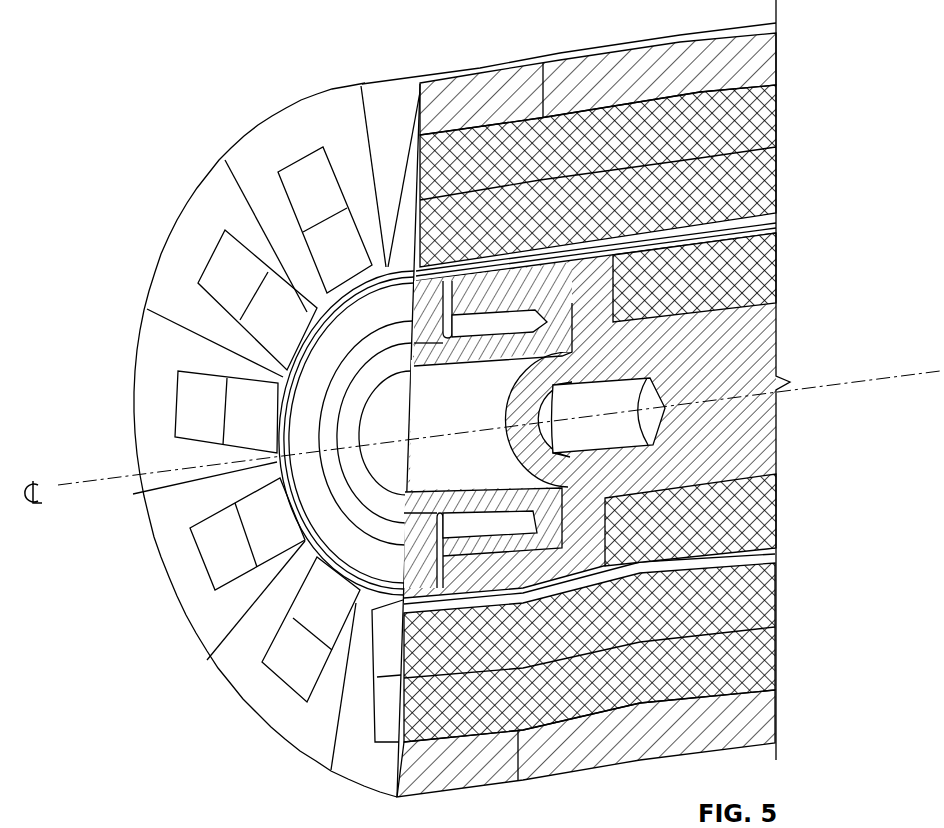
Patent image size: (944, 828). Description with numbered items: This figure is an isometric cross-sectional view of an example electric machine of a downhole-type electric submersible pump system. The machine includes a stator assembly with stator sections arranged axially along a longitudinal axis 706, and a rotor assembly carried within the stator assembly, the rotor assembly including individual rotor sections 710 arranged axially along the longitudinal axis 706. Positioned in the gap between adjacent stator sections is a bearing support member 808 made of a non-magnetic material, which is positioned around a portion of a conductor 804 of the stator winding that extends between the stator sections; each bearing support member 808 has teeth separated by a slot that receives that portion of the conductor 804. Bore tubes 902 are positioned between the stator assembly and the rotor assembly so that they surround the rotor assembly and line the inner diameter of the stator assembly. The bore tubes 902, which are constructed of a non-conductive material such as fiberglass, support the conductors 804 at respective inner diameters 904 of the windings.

The longitudinal axis 706 is at (106, 478).
The rotor section 710 is at (803, 511).
The conductor 804 is at (220, 268).
The bearing support member 808 is at (248, 155).
The bore tube 902 is at (777, 193).
The inner diameter 904 is at (320, 238).